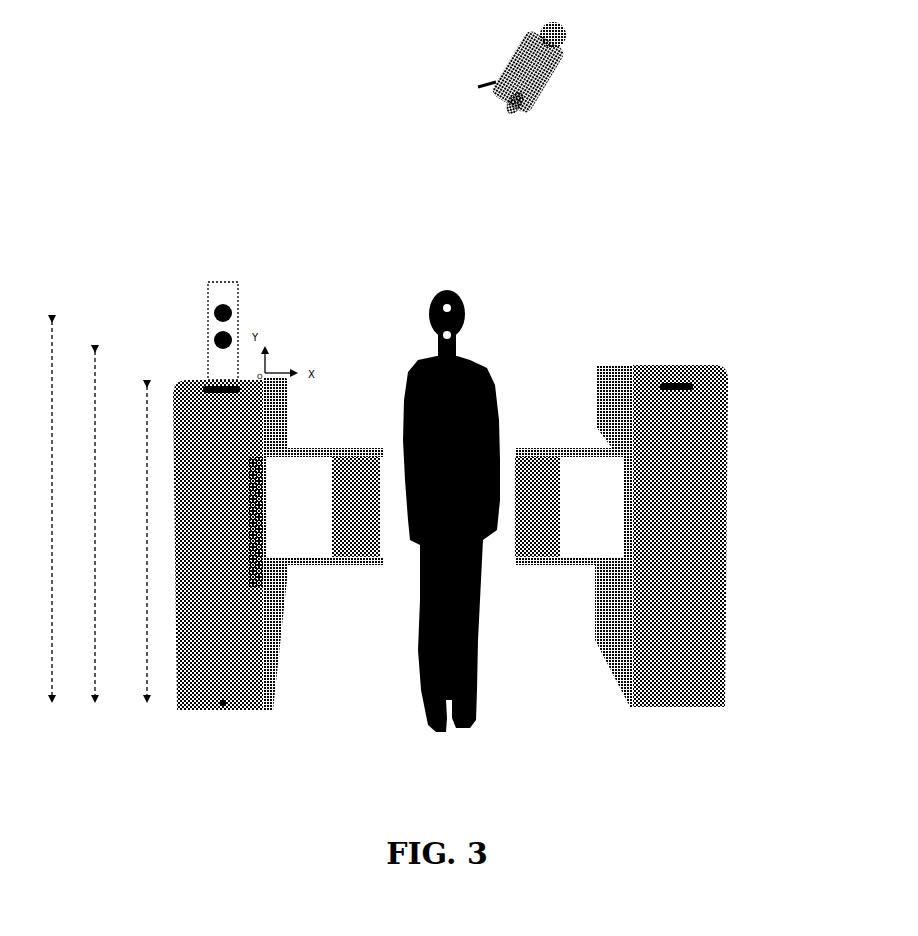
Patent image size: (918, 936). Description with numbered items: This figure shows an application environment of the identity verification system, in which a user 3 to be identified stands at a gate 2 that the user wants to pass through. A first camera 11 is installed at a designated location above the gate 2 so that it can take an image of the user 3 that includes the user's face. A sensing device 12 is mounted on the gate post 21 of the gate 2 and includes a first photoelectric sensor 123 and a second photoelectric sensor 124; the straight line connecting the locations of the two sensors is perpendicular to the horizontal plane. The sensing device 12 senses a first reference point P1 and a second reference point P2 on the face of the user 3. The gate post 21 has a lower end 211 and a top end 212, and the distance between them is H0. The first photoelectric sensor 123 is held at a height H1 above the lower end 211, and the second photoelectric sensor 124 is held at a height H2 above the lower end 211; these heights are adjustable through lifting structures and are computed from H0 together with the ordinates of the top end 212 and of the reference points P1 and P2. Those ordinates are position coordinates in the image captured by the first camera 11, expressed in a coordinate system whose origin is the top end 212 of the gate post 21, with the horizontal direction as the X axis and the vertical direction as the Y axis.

The first camera 11 is at (532, 77).
The sensing device 12 is at (218, 269).
The first photoelectric sensor 123 is at (212, 342).
The second photoelectric sensor 124 is at (233, 313).
The gate 2 is at (712, 501).
The gate post 21 is at (258, 438).
The lower end 211 is at (223, 703).
The top end 212 is at (210, 381).
The user 3 is at (483, 490).
The first reference point P1 is at (455, 342).
The second reference point P2 is at (465, 313).
The distance between the lower end and the top end of the gate post H0 is at (137, 543).
The height of the first photoelectric sensor H1 is at (84, 526).
The height of the second photoelectric sensor H2 is at (42, 511).